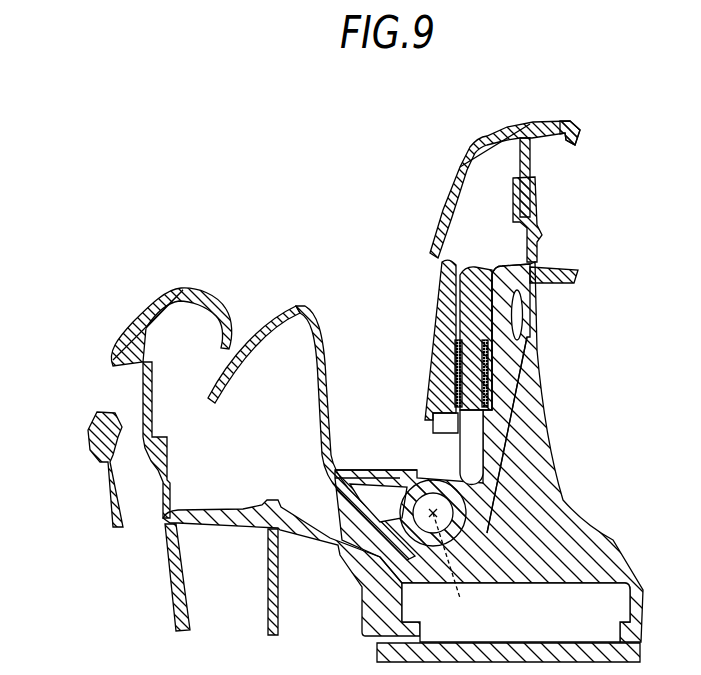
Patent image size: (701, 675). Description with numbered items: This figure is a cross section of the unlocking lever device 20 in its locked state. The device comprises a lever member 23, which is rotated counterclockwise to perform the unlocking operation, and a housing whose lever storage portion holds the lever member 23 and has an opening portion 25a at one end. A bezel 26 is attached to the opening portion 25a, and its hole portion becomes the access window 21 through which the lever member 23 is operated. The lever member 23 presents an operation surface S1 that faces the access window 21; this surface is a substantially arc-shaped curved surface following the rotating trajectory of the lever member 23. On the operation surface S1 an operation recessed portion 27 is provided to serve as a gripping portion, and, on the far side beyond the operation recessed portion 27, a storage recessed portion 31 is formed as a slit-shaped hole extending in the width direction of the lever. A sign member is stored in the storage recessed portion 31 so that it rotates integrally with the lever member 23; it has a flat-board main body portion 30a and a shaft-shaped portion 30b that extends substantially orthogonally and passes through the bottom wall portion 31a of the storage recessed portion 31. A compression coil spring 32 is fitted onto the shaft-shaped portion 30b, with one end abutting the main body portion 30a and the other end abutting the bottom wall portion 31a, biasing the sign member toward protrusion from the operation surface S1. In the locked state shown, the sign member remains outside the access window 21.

The unlocking lever device 20 is at (104, 196).
The access window 21 is at (233, 325).
The lever member 23 is at (323, 463).
The opening portion 25a is at (532, 172).
The bezel 26 is at (572, 124).
The operation recessed portion 27 is at (322, 318).
The main body portion 30a is at (458, 248).
The shaft-shaped portion 30b is at (527, 473).
The storage recessed portion 31 is at (487, 270).
The bottom wall portion 31a is at (503, 423).
The compression coil spring 32 is at (517, 343).
The operation surface S1 is at (265, 325).